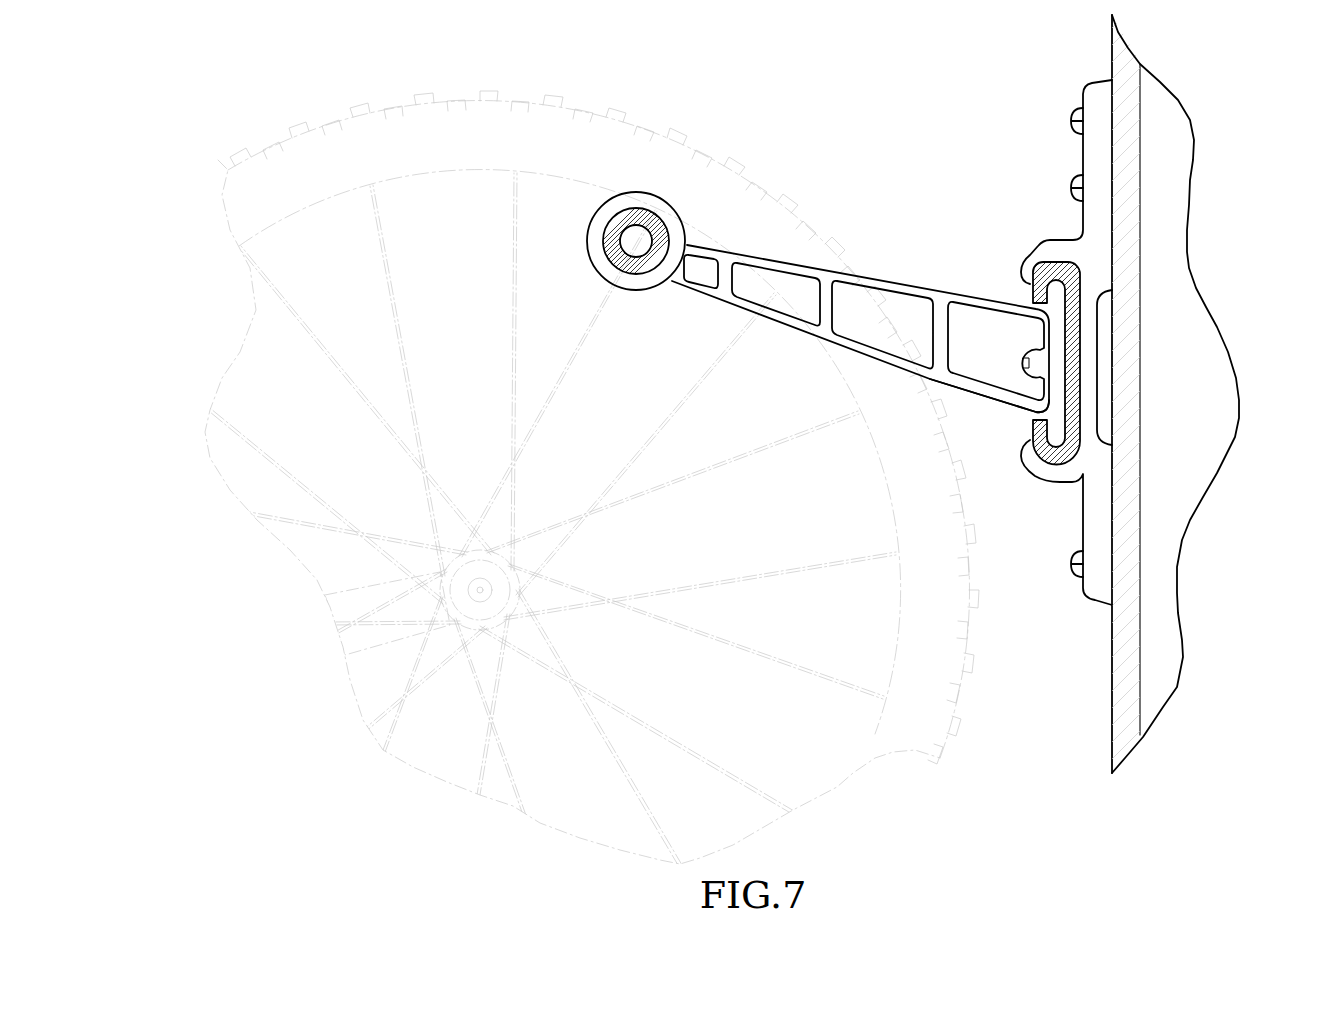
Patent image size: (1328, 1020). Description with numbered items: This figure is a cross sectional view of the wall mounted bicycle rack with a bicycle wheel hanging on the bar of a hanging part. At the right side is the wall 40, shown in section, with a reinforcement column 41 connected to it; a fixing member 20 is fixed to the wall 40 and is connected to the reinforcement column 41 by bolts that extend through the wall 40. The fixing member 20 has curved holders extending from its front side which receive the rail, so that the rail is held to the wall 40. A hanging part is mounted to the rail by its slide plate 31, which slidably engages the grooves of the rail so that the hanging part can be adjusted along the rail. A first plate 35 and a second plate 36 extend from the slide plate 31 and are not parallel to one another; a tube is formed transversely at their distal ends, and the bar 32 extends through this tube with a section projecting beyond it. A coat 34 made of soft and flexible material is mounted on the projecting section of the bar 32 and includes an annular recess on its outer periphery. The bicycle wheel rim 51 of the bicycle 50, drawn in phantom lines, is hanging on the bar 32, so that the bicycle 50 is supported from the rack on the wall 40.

The fixing member 20 is at (1096, 602).
The slide plate 31 is at (1057, 442).
The bar 32 is at (660, 240).
The coat 34 is at (650, 193).
The first plate 35 is at (910, 283).
The second plate 36 is at (967, 403).
The wall 40 is at (1125, 735).
The reinforcement column 41 is at (1160, 608).
The bicycle 50 is at (295, 560).
The bicycle wheel rim 51 is at (240, 222).